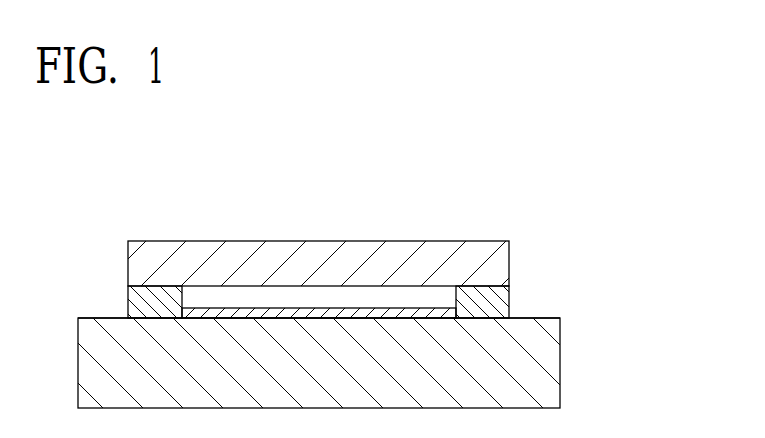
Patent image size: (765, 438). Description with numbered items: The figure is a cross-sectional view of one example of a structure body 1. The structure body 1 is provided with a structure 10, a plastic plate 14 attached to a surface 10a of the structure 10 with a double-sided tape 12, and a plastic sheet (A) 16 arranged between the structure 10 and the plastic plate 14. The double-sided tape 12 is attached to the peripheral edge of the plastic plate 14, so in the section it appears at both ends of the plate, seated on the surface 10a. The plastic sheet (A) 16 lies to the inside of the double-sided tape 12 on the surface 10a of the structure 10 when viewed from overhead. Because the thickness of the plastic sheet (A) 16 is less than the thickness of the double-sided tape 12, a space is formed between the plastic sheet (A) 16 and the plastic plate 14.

The structure body 1 is at (459, 193).
The structure 10 is at (561, 362).
The surface of the structure 10a is at (542, 318).
The double-sided tape 12 is at (128, 303).
The plastic plate 14 is at (192, 241).
The plastic sheet (A) 16 is at (306, 308).